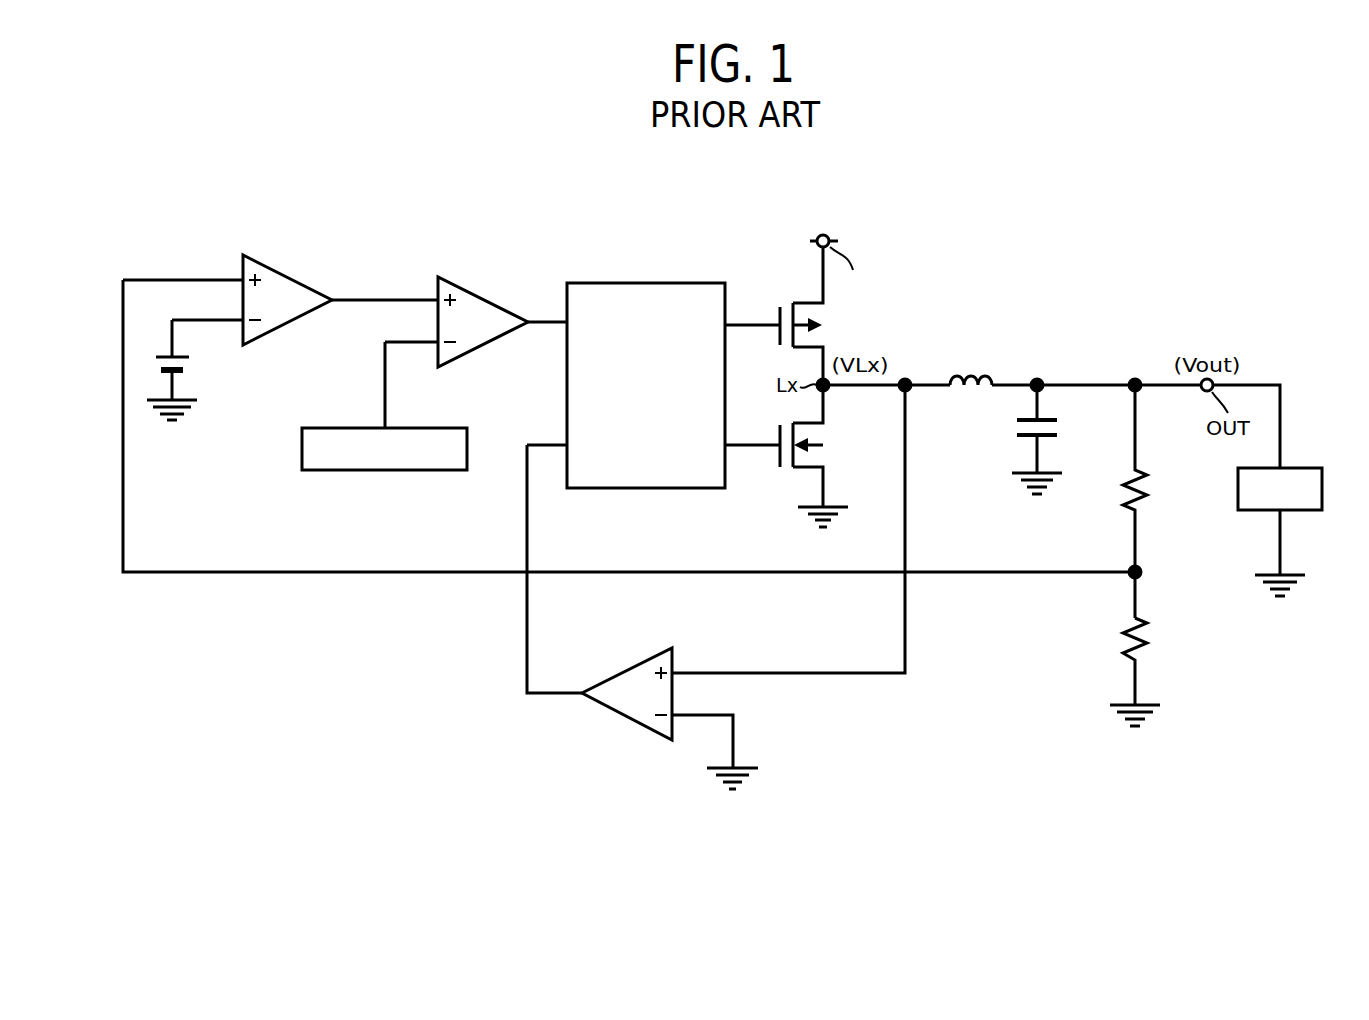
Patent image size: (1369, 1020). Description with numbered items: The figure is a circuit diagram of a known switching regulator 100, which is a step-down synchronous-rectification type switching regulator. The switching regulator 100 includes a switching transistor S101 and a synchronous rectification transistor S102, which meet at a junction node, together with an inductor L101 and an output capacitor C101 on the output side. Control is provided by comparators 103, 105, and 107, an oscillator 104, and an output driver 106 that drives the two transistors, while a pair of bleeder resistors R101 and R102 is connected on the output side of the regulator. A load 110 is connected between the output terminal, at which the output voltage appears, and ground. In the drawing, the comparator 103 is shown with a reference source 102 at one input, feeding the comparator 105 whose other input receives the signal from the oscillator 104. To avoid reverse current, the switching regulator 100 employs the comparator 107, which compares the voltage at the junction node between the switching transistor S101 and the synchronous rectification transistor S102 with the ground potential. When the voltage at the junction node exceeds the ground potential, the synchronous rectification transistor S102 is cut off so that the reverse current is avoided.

The switching regulator 100 is at (982, 250).
The reference voltage source 102 is at (202, 368).
The comparator 103 is at (274, 269).
The oscillator 104 is at (423, 471).
The comparator 105 is at (470, 292).
The output driver 106 is at (680, 283).
The comparator 107 is at (625, 716).
The load 110 is at (1310, 468).
The switching transistor S101 is at (831, 294).
The synchronous rectification transistor S102 is at (831, 472).
The inductor L101 is at (973, 361).
The output capacitor C101 is at (1065, 436).
The bleeder resistor R101 is at (1164, 498).
The bleeder resistor R102 is at (1154, 687).